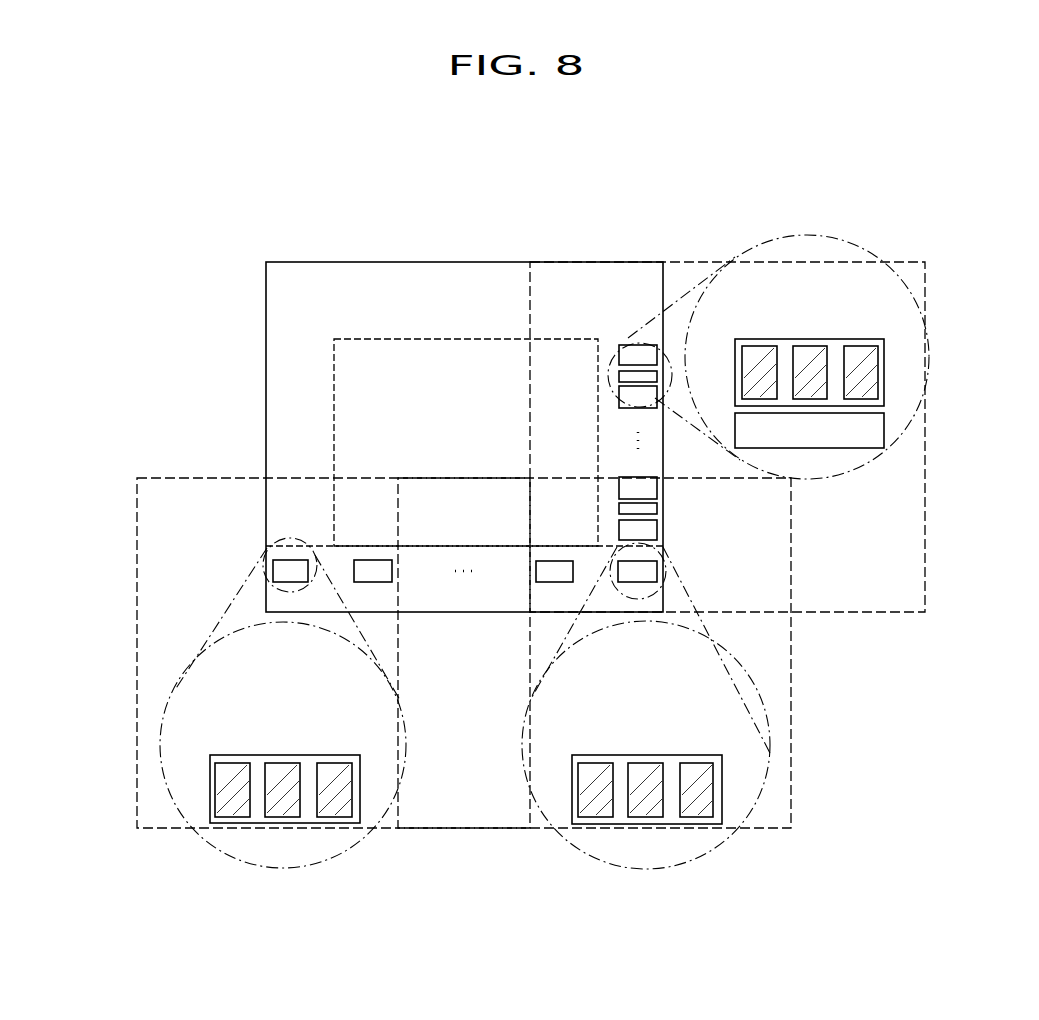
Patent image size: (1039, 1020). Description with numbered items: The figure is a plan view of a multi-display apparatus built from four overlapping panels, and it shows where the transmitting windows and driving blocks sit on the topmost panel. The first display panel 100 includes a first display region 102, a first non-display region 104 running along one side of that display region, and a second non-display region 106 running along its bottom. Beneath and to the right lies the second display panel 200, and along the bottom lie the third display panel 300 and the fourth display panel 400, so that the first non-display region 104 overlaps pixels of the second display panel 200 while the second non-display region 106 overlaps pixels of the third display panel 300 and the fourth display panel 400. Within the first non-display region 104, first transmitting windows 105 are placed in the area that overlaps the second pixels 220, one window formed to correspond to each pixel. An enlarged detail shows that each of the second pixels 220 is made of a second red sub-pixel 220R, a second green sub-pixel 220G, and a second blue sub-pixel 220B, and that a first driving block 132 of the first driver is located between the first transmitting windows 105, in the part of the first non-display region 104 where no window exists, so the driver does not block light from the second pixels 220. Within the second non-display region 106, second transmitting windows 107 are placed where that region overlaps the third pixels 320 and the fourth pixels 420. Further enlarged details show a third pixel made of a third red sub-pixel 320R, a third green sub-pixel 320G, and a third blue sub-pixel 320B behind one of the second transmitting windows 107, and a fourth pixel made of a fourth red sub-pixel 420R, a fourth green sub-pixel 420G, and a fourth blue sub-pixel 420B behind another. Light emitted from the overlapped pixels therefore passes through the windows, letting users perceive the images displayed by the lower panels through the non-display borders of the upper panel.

The first display panel 100 is at (266, 380).
The first display region 102 is at (428, 337).
The first non-display region 104 is at (617, 343).
The first transmitting windows 105 is at (884, 372).
The second non-display region 106 is at (462, 613).
The second transmitting windows 107 is at (210, 783).
The first driving blocks 132 is at (884, 428).
The second display panel 200 is at (925, 503).
The second pixels 220 is at (812, 323).
The second red sub-pixel 220R is at (759, 346).
The second green sub-pixel 220G is at (810, 346).
The second blue sub-pixel 220B is at (873, 344).
The third display panel 300 is at (136, 651).
The third pixels 320 is at (285, 736).
The third red sub-pixel 320R is at (232, 763).
The third green sub-pixel 320G is at (283, 763).
The third blue sub-pixel 320B is at (346, 756).
The fourth display panel 400 is at (793, 717).
The fourth pixels 420 is at (650, 736).
The fourth red sub-pixel 420R is at (595, 763).
The fourth green sub-pixel 420G is at (645, 763).
The fourth blue sub-pixel 420B is at (709, 756).